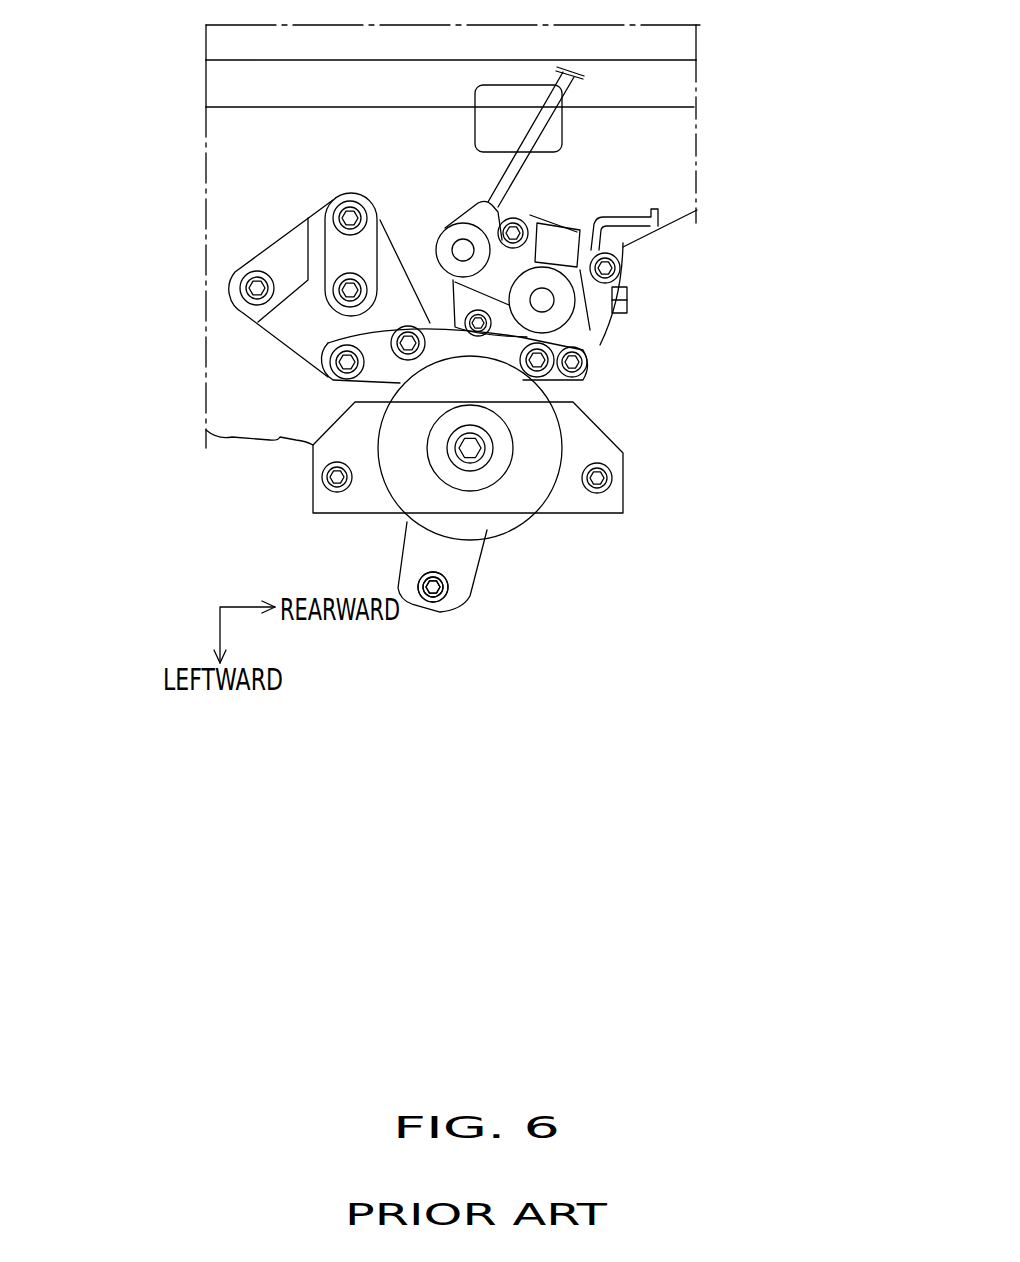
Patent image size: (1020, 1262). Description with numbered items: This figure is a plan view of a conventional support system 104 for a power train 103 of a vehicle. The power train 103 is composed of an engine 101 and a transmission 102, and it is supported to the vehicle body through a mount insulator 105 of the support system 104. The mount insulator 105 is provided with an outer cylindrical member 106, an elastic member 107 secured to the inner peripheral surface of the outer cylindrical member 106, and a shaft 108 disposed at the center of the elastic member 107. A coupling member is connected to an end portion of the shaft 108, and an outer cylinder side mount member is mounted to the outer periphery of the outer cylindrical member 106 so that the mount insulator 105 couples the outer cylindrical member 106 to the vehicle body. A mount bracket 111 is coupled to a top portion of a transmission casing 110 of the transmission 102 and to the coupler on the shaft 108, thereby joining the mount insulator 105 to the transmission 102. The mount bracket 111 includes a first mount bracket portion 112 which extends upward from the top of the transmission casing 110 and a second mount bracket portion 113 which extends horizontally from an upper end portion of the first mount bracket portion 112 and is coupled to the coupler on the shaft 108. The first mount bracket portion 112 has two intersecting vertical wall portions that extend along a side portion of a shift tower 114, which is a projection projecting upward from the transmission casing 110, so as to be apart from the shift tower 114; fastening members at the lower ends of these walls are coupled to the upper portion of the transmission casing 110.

The engine 101 is at (698, 45).
The transmission 102 is at (509, 254).
The power train 103 is at (552, 231).
The support system 104 is at (227, 482).
The mount insulator 105 is at (508, 533).
The outer cylindrical member 106 is at (416, 494).
The elastic member 107 is at (559, 480).
The shaft 108 is at (473, 448).
The transmission casing 110 is at (580, 213).
The mount bracket 111 is at (309, 315).
The first mount bracket portion 112 is at (263, 337).
The second mount bracket portion 113 is at (353, 388).
The shift tower 114 is at (580, 333).